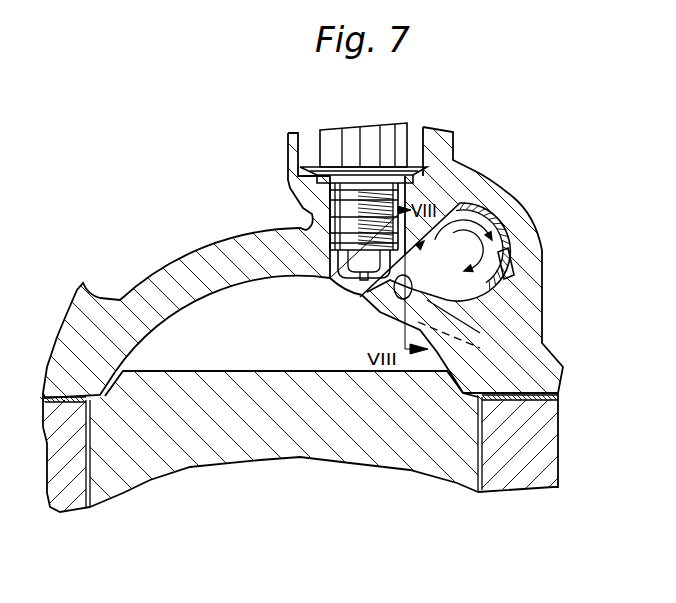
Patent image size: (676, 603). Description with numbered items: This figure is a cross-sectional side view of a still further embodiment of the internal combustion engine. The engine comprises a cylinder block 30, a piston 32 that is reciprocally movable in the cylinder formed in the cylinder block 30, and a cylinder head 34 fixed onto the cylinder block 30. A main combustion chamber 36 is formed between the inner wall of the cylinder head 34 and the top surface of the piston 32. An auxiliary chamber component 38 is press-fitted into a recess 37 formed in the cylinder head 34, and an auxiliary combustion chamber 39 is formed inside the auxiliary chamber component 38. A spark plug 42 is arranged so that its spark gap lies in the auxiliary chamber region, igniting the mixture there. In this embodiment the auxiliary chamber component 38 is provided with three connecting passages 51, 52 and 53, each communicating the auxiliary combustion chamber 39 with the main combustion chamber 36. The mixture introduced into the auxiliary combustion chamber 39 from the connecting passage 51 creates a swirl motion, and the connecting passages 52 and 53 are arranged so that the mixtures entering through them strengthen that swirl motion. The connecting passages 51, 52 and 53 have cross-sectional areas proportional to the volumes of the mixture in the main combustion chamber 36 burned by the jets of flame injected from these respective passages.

The cylinder block 30 is at (528, 433).
The piston 32 is at (307, 417).
The cylinder head 34 is at (192, 255).
The main combustion chamber 36 is at (250, 355).
The recess 37 is at (470, 174).
The auxiliary chamber component 38 is at (494, 219).
The auxiliary combustion chamber 39 is at (462, 275).
The spark plug 42 is at (368, 141).
The connecting passage 51 is at (357, 299).
The connecting passage 52 is at (470, 303).
The connecting passage 53 is at (463, 347).